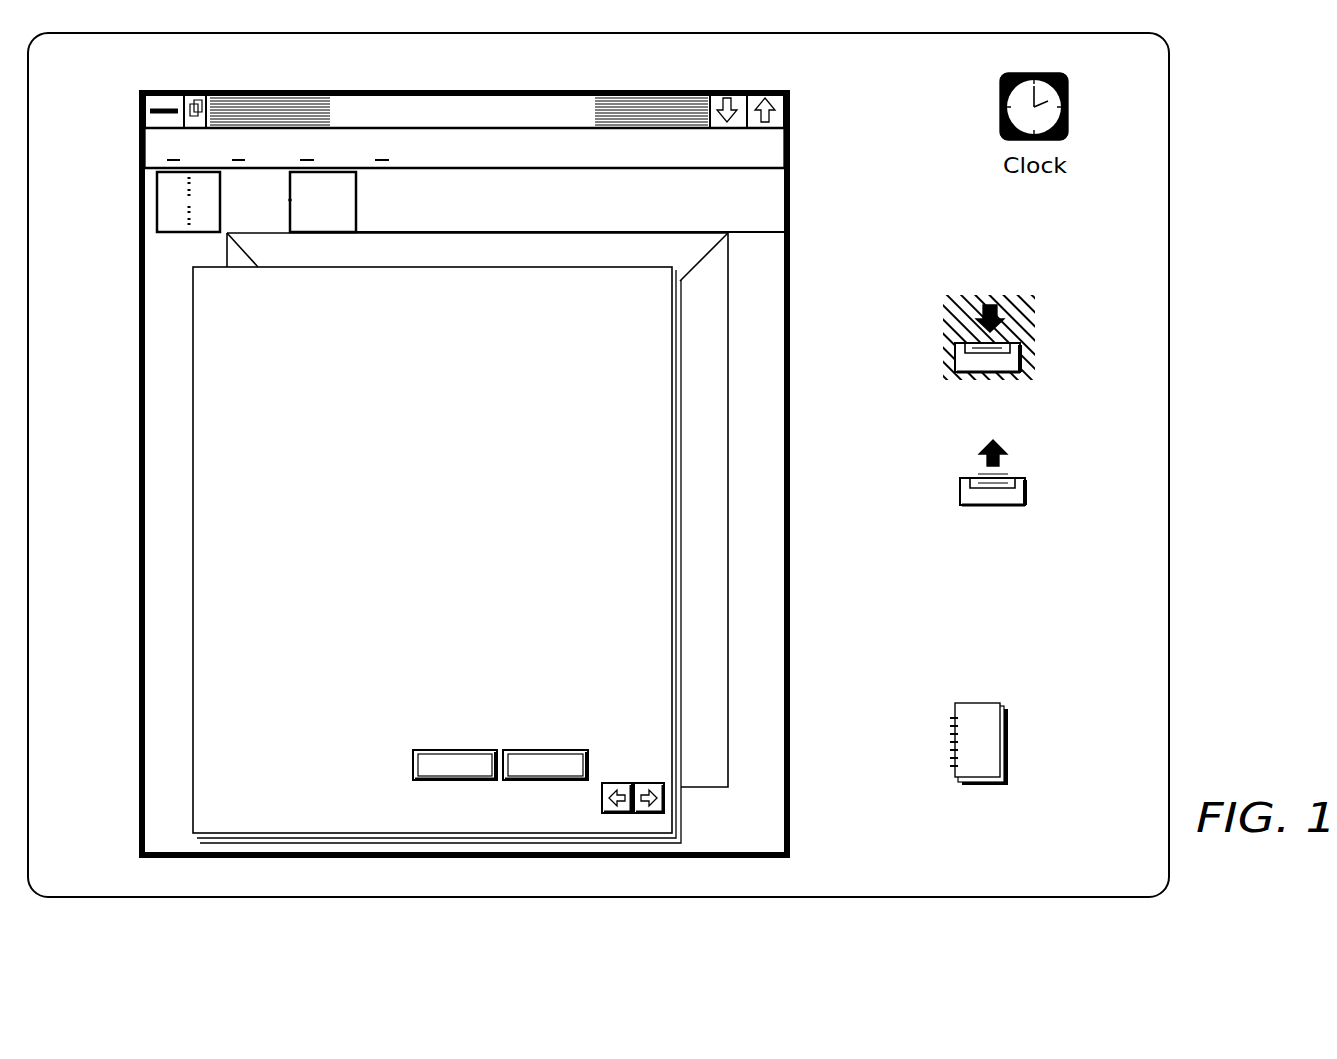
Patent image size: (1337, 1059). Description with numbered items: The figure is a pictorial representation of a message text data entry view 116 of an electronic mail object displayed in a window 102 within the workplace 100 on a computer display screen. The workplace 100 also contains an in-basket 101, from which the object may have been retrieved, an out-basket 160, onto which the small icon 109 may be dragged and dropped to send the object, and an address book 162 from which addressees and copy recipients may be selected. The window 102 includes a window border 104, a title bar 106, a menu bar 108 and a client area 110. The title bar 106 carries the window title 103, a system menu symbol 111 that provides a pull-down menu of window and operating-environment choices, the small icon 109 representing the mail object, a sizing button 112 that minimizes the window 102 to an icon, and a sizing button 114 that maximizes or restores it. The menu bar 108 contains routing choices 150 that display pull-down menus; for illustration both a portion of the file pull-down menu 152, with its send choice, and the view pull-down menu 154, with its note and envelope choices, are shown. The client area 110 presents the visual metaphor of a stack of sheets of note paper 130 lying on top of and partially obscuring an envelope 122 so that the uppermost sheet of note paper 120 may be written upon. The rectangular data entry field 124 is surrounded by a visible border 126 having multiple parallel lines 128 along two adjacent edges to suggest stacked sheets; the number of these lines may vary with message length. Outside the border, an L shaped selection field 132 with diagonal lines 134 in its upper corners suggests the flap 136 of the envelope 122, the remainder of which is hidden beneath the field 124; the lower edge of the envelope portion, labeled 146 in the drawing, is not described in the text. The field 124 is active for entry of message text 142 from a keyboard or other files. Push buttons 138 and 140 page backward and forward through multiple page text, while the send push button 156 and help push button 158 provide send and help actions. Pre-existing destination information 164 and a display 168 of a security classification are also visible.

The workplace 100 is at (1178, 531).
The in-basket 101 is at (1028, 368).
The window 102 is at (790, 573).
The window title 103 is at (318, 100).
The window border 104 is at (790, 468).
The title bar 106 is at (642, 100).
The menu bar 108 is at (785, 147).
The small icon 109 is at (199, 95).
The client area 110 is at (768, 512).
The system menu symbol 111 is at (153, 95).
The window sizing button 112 is at (724, 95).
The window sizing button 114 is at (770, 95).
The message text data entry view 116 is at (190, 545).
The uppermost sheet of note paper 120 is at (488, 835).
The envelope 122 is at (729, 697).
The rectangular data entry field 124 is at (193, 321).
The visible border 126 is at (193, 507).
The parallel lines 128 is at (680, 802).
The stack of sheets of note paper 130 is at (193, 638).
The L shaped selection field 132 is at (228, 256).
The diagonal lines 134 is at (716, 238).
The flap 136 is at (662, 238).
The push button 138 is at (602, 798).
The push button 140 is at (646, 783).
The message text 142 is at (285, 483).
The envelope bottom edge 146 is at (730, 768).
The routing choices 150 is at (162, 152).
The file pull-down menu 152 is at (162, 186).
The view pull-down menu 154 is at (352, 210).
The send push button 156 is at (438, 750).
The help push button 158 is at (535, 750).
The out-basket 160 is at (1030, 492).
The address book 162 is at (975, 710).
The pre-existing destination information 164 is at (502, 268).
The display of security classification 168 is at (702, 562).